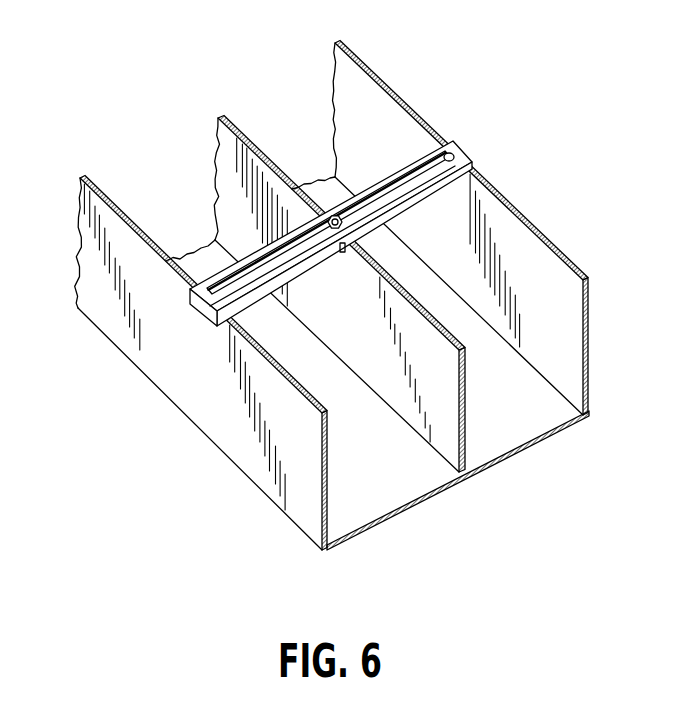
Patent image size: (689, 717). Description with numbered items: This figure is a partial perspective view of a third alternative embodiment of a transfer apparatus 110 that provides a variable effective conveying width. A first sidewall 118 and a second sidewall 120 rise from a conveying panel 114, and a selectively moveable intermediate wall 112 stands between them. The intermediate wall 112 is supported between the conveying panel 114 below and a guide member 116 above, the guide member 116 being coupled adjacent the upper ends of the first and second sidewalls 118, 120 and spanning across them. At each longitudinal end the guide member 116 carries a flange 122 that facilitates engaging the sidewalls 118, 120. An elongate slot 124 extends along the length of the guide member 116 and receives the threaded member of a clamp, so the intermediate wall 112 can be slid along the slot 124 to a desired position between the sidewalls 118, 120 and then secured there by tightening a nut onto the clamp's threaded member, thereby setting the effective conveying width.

The transfer apparatus 110 is at (144, 112).
The intermediate wall 112 is at (468, 428).
The conveying panel 114 is at (408, 506).
The guide member 116 is at (294, 223).
The first sidewall 118 is at (233, 450).
The second sidewall 120 is at (505, 201).
The flange 122 is at (208, 323).
The elongate slot 124 is at (410, 165).